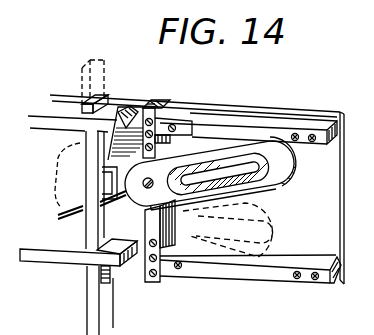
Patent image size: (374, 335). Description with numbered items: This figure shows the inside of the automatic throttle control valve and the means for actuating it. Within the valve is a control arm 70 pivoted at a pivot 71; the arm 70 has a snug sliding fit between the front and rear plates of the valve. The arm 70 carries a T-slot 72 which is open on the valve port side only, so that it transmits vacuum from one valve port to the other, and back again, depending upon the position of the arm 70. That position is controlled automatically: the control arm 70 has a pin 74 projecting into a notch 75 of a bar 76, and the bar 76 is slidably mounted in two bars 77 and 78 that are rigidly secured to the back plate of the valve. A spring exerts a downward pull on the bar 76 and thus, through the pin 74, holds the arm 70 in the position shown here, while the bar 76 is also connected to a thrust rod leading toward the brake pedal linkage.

The control arm 70 is at (217, 150).
The pivot 71 is at (146, 188).
The T-slot 72 is at (247, 157).
The pin 74 is at (58, 217).
The notch 75 is at (108, 180).
The bar 76 is at (106, 302).
The bar 77 is at (50, 122).
The bar 78 is at (76, 246).